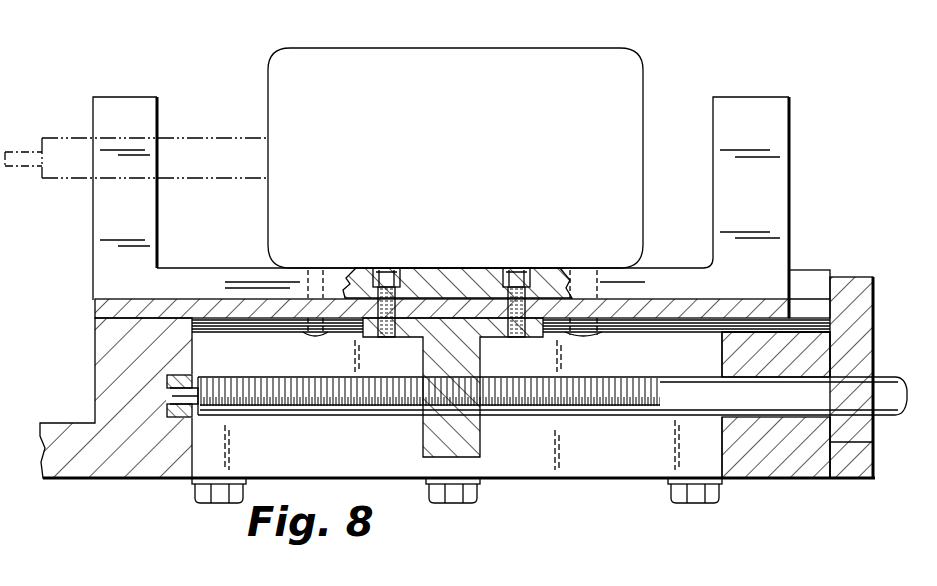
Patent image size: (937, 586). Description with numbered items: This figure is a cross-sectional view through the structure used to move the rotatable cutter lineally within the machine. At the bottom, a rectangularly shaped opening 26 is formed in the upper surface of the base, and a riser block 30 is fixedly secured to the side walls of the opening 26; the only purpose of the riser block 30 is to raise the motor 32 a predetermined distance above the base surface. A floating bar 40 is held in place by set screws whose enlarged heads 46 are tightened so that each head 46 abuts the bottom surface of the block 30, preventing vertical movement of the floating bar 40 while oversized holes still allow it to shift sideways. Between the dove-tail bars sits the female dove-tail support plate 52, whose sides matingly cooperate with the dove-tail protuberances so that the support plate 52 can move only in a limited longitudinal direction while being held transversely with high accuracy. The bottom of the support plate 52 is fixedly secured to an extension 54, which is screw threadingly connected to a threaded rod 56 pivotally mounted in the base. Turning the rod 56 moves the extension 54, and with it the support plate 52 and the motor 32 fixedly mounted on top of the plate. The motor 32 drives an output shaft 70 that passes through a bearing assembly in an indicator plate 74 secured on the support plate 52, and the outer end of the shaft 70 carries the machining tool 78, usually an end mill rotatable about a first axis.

The opening 26 is at (600, 456).
The riser block 30 is at (105, 357).
The motor 32 is at (396, 45).
The floating bar 40 is at (640, 324).
The enlarged head 46 is at (207, 504).
The support plate 52 is at (258, 310).
The extension 54 is at (468, 433).
The threaded rod 56 is at (362, 408).
The output shaft 70 is at (180, 146).
The indicator plate 74 is at (121, 106).
The machining tool 78 is at (22, 152).